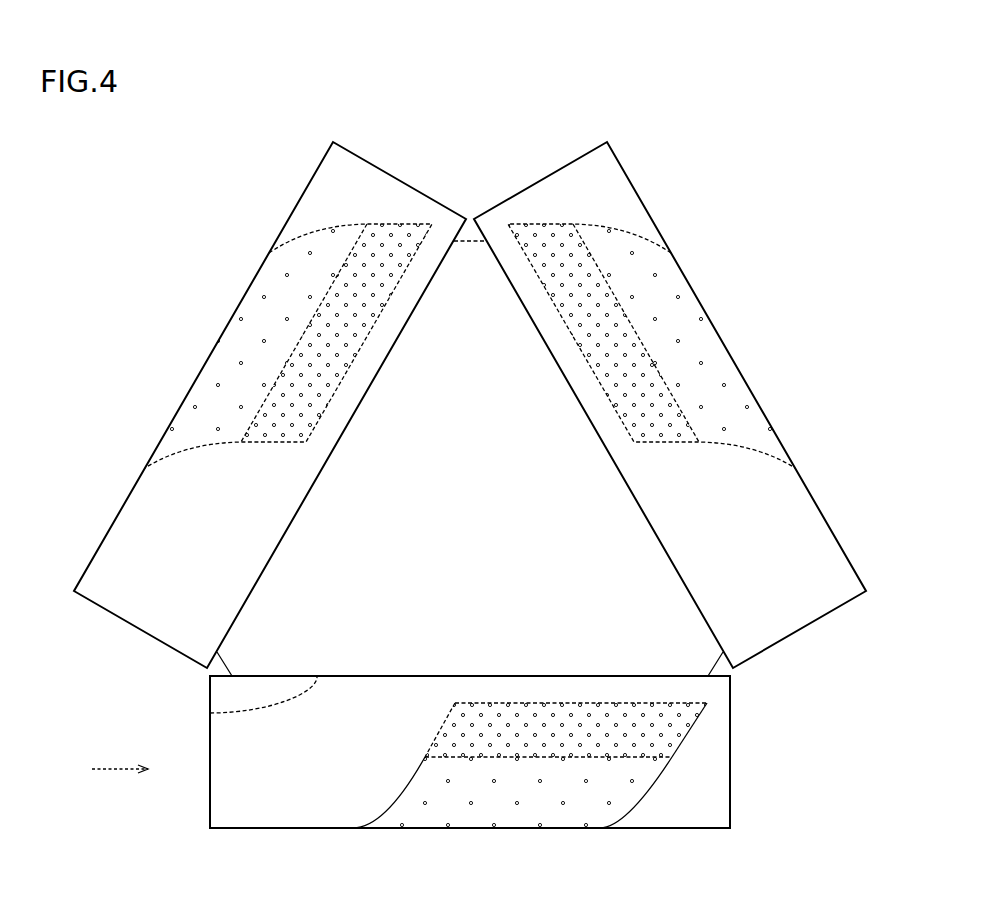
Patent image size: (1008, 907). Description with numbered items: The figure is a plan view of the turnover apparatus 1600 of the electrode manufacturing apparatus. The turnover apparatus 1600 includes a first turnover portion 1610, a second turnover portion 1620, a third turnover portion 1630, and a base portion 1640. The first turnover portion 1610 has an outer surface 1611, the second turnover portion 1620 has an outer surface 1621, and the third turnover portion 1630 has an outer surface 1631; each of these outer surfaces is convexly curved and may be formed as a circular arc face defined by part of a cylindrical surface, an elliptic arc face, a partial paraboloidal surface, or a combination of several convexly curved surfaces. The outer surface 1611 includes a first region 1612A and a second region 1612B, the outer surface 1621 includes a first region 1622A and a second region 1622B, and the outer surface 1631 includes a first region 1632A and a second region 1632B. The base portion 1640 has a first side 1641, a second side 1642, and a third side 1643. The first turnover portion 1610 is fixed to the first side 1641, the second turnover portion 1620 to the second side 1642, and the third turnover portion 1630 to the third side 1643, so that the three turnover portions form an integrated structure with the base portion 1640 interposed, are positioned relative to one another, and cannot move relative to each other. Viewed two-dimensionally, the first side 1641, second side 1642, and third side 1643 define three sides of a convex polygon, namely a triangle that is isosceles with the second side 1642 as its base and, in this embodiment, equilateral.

The turnover apparatus 1600 is at (243, 160).
The first turnover portion 1610 is at (434, 776).
The outer surface 1611 is at (321, 790).
The first region 1612A is at (538, 738).
The second region 1612B is at (452, 807).
The second turnover portion 1620 is at (264, 418).
The outer surface 1621 is at (143, 520).
The first region 1622A is at (317, 347).
The second region 1622B is at (220, 383).
The third turnover portion 1630 is at (675, 418).
The outer surface 1631 is at (797, 520).
The first region 1632A is at (628, 360).
The second region 1632B is at (720, 380).
The base portion 1640 is at (475, 323).
The first side 1641 is at (210, 713).
The second side 1642 is at (257, 582).
The third side 1643 is at (683, 582).